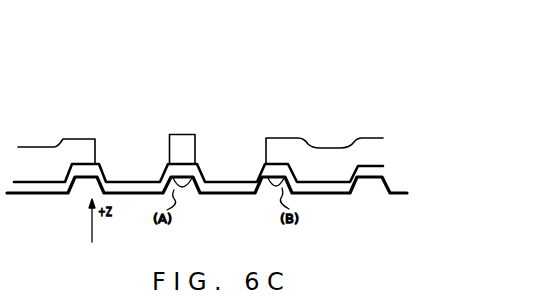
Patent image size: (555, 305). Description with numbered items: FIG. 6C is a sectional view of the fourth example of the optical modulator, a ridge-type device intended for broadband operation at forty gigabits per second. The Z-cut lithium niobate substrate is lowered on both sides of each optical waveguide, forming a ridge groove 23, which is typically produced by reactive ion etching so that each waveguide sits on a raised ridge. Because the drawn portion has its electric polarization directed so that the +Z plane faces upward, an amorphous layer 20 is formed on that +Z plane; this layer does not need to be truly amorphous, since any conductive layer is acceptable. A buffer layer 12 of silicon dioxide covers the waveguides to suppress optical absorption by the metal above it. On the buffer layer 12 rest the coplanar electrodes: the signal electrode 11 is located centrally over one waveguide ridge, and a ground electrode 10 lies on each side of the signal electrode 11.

The ground electrode 10 is at (219, 132).
The signal electrode 11 is at (183, 133).
The buffer layer 12 is at (199, 172).
The amorphous layer 20 is at (212, 196).
The ridge groove 23 is at (125, 166).